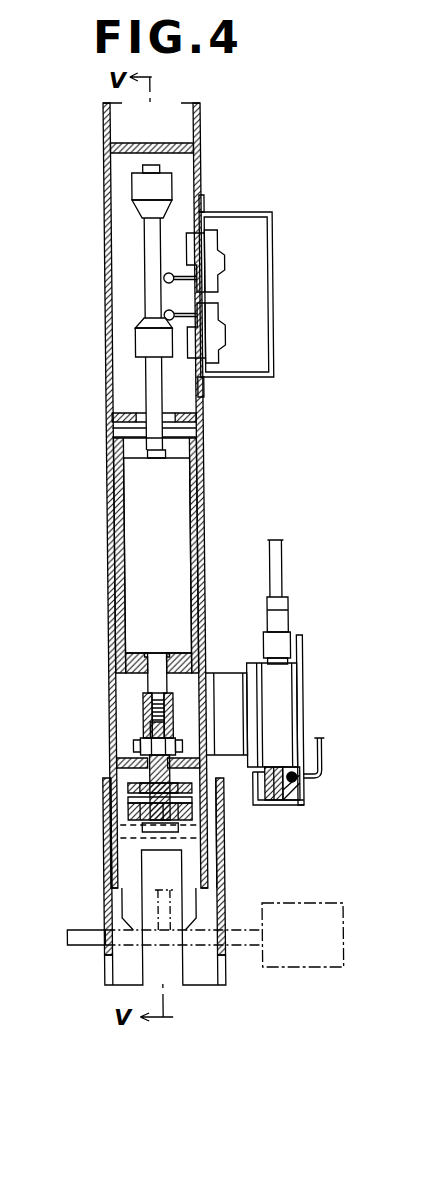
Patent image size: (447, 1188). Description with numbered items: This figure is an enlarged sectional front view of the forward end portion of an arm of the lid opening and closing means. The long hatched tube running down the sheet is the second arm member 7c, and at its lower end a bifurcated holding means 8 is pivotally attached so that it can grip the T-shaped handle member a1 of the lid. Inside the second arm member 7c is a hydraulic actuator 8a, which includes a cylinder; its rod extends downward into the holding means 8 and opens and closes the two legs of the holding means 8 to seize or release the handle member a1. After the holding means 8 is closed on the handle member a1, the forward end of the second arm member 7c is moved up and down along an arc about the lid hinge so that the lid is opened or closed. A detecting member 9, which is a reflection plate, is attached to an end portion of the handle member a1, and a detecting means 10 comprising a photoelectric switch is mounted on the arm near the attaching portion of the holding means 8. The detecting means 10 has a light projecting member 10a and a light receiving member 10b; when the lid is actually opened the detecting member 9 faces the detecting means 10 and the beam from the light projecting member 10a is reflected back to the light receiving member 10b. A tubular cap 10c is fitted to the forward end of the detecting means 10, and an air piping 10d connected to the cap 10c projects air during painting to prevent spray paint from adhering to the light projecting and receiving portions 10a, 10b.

The second arm member 7c is at (103, 412).
The hydraulic actuator 8a is at (172, 533).
The holding means 8 is at (214, 877).
The detecting member 9 is at (326, 945).
The detecting means 10 is at (271, 715).
The light projecting member 10a is at (264, 803).
The light receiving member 10b is at (291, 783).
The tubular cap 10c is at (290, 788).
The air piping 10d is at (296, 778).
The handle member a1 is at (78, 944).